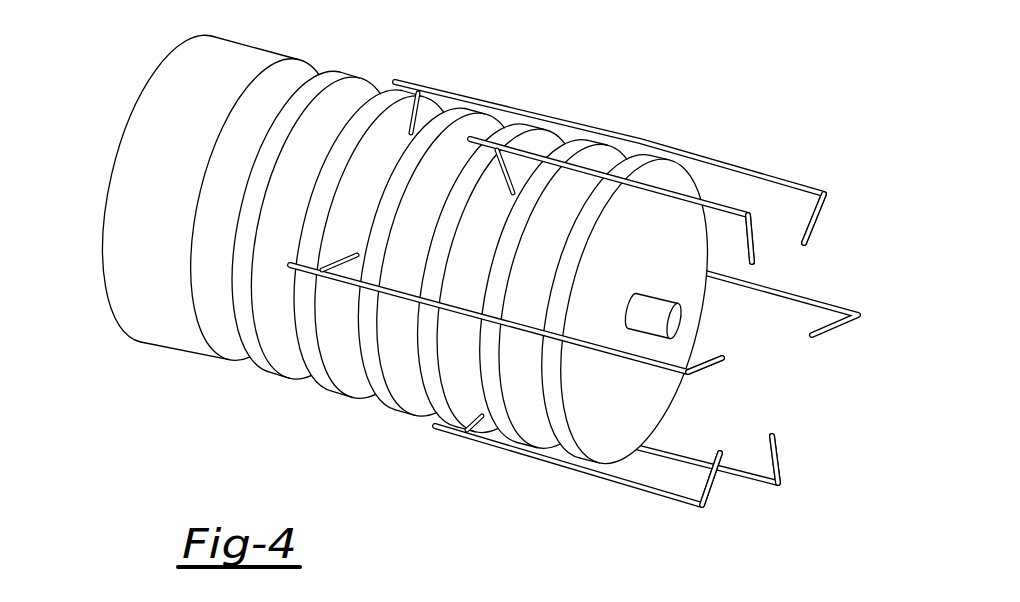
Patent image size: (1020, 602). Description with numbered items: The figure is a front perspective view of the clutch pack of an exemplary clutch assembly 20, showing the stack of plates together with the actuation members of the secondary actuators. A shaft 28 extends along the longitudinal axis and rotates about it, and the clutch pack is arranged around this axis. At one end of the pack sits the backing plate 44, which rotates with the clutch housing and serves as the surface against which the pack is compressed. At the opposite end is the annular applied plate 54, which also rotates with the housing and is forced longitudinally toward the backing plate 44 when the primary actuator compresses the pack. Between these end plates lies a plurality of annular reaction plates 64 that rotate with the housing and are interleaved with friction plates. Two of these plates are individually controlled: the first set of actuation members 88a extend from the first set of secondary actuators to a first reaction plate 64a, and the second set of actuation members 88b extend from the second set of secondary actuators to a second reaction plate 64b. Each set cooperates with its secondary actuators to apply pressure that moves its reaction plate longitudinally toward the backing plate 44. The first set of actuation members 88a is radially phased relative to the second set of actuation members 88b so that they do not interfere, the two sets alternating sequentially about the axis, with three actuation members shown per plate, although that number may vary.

The clutch assembly 20 is at (824, 120).
The shaft 28 is at (683, 322).
The backing plate 44 is at (180, 77).
The applied plate 54 is at (663, 178).
The reaction plates 64 is at (353, 88).
The first reaction plate 64a is at (533, 140).
The second reaction plate 64b is at (419, 92).
The first set of actuation members 88a is at (598, 302).
The second set of actuation members 88b is at (813, 210).